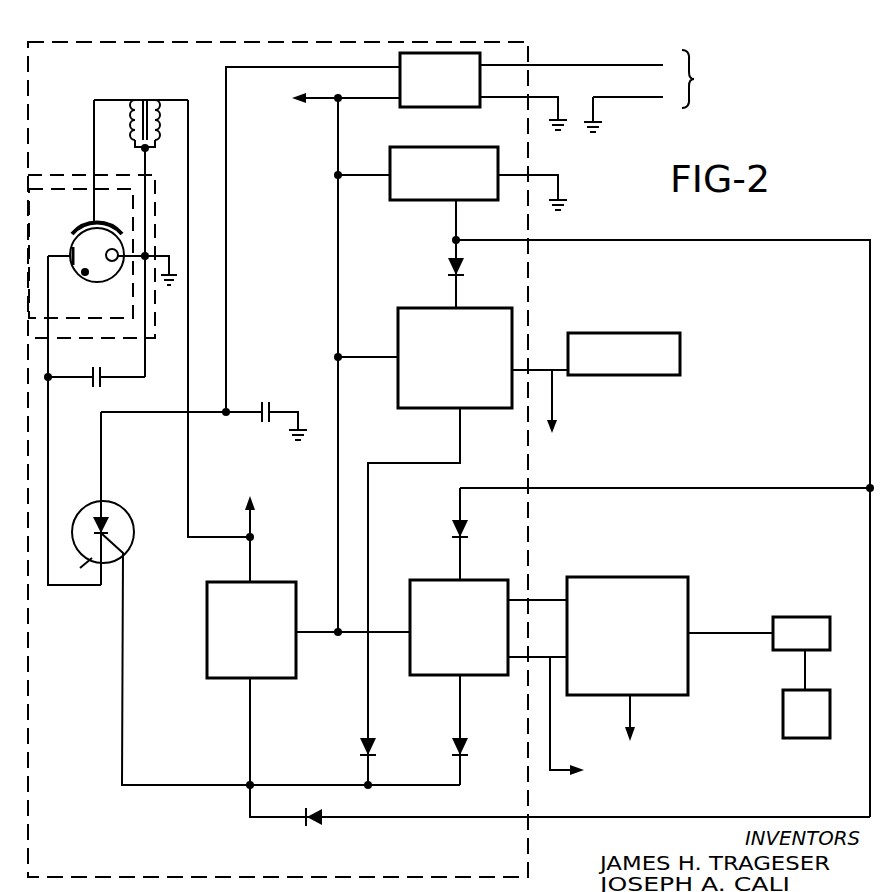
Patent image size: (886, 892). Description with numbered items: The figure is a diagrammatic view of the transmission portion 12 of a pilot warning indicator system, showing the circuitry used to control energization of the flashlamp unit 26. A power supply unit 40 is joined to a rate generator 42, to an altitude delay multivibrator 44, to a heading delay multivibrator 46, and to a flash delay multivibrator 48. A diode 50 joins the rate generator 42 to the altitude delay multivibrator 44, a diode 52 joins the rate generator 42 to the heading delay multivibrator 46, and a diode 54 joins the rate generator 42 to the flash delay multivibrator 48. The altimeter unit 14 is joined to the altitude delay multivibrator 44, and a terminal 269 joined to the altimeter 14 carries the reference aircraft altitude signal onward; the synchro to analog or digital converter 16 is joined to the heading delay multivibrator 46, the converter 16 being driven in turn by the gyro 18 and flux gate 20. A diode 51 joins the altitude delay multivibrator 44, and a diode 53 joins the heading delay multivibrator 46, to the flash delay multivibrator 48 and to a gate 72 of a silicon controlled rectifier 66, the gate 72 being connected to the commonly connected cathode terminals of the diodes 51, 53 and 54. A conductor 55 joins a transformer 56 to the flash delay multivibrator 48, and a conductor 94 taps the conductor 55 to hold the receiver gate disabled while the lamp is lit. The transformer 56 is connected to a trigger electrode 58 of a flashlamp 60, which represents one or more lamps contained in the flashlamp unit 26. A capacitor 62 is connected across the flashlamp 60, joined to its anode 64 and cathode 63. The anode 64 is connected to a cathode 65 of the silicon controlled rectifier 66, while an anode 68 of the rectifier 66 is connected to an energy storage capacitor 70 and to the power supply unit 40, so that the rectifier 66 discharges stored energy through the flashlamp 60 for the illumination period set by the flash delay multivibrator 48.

The sensor and signal processing unit (dashed enclosure) 12 is at (77, 38).
The flashlamp unit 26 is at (45, 185).
The transformer 56 is at (148, 98).
The trigger electrode 58 is at (84, 225).
The flashlamp 60 is at (75, 250).
The anode 64 is at (70, 268).
The cathode 63 is at (112, 262).
The capacitor 62 is at (95, 388).
The conductor 55 is at (188, 388).
The energy storage capacitor 70 is at (262, 398).
The silicon controlled rectifier 66 is at (125, 515).
The anode 68 is at (100, 506).
The gate 72 is at (125, 553).
The cathode 65 is at (73, 571).
The conductor 94 is at (258, 522).
The flash delay multivibrator 48 is at (215, 680).
The power supply unit 40 is at (400, 78).
The rate generator 42 is at (392, 158).
The diode 50 is at (450, 266).
The altitude delay multivibrator 44 is at (398, 320).
The terminal 269 is at (545, 368).
The altimeter unit 14 is at (627, 332).
The diode 52 is at (450, 527).
The heading delay multivibrator 46 is at (430, 677).
The diode 51 is at (360, 742).
The diode 53 is at (470, 742).
The diode 54 is at (315, 826).
The synchro to analog or digital converter 16 is at (630, 576).
The gyro 18 is at (808, 616).
The flux gate 20 is at (783, 712).